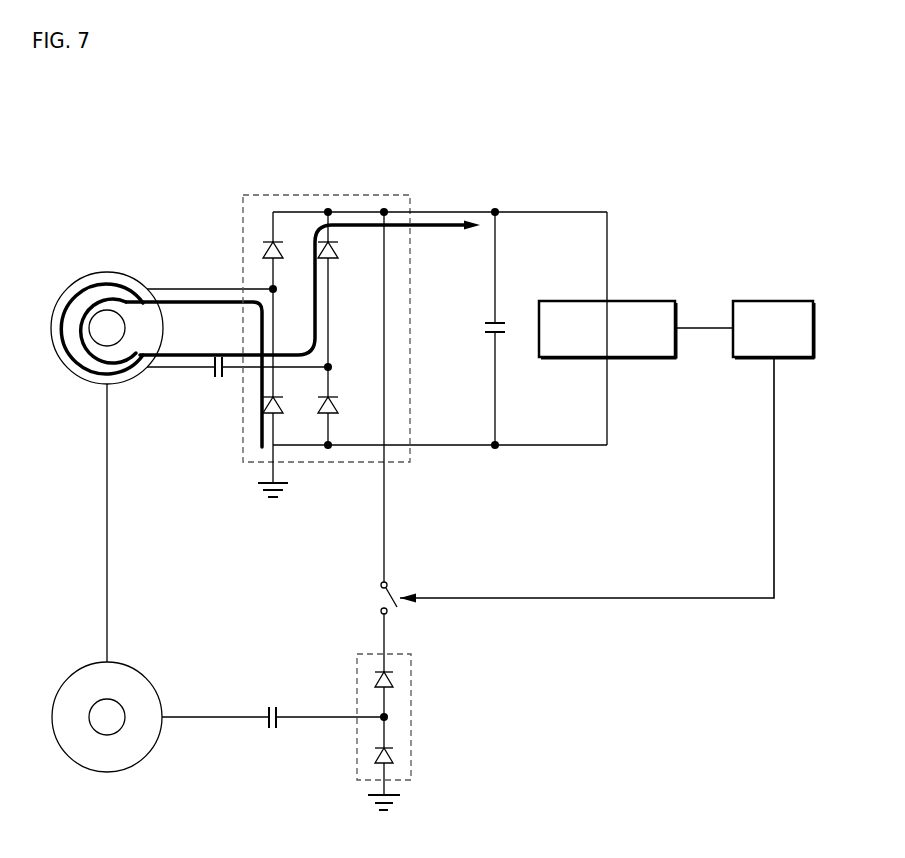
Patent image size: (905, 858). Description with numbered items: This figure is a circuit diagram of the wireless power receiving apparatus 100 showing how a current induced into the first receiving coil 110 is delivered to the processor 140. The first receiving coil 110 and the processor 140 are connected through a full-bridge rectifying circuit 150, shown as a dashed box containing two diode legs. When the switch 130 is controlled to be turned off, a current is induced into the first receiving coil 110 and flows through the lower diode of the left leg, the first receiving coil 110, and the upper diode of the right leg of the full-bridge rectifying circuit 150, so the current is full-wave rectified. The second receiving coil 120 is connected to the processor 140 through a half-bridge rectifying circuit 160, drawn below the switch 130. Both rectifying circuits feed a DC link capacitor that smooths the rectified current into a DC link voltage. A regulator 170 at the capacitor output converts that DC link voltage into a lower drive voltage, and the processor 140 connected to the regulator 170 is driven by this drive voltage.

The wireless power receiving apparatus 100 is at (85, 108).
The first receiving coil 110 is at (108, 283).
The second receiving coil 120 is at (85, 665).
The switch 130 is at (393, 584).
The processor 140 is at (797, 341).
The full-bridge rectifying circuit 150 is at (394, 193).
The half-bridge rectifying circuit 160 is at (412, 717).
The regulator 170 is at (646, 300).